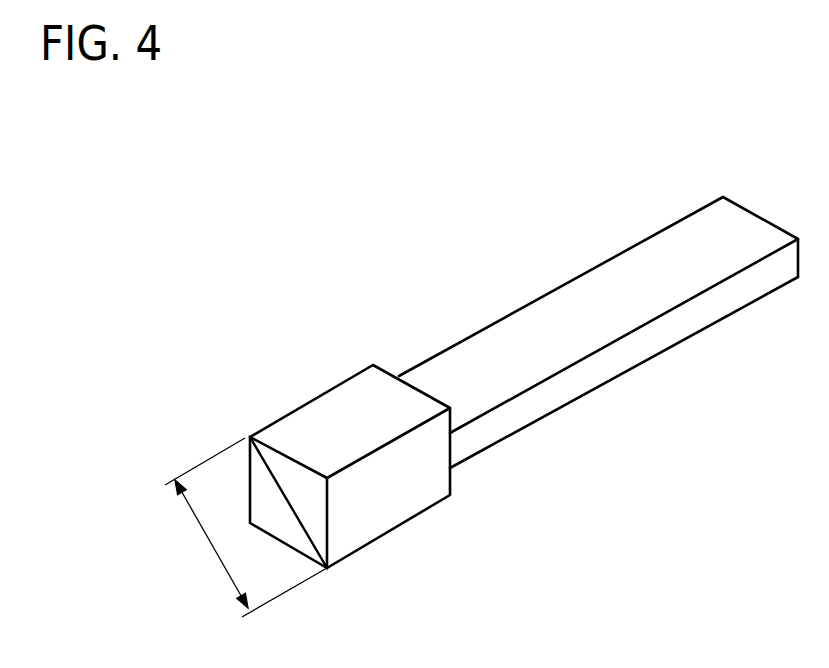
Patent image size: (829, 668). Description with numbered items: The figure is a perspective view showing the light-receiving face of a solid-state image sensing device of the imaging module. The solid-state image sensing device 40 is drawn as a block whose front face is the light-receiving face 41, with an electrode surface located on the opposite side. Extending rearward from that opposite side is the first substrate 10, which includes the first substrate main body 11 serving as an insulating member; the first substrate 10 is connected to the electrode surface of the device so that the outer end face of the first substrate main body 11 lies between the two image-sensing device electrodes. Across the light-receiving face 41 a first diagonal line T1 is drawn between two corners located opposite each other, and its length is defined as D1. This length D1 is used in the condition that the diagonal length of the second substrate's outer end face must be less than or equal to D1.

The first substrate 10 is at (524, 336).
The first substrate main body 11 is at (563, 313).
The solid-state image sensing device 40 is at (350, 442).
The light-receiving face 41 is at (298, 477).
The first diagonal line T1 is at (293, 508).
The length of the first diagonal line D1 is at (246, 527).